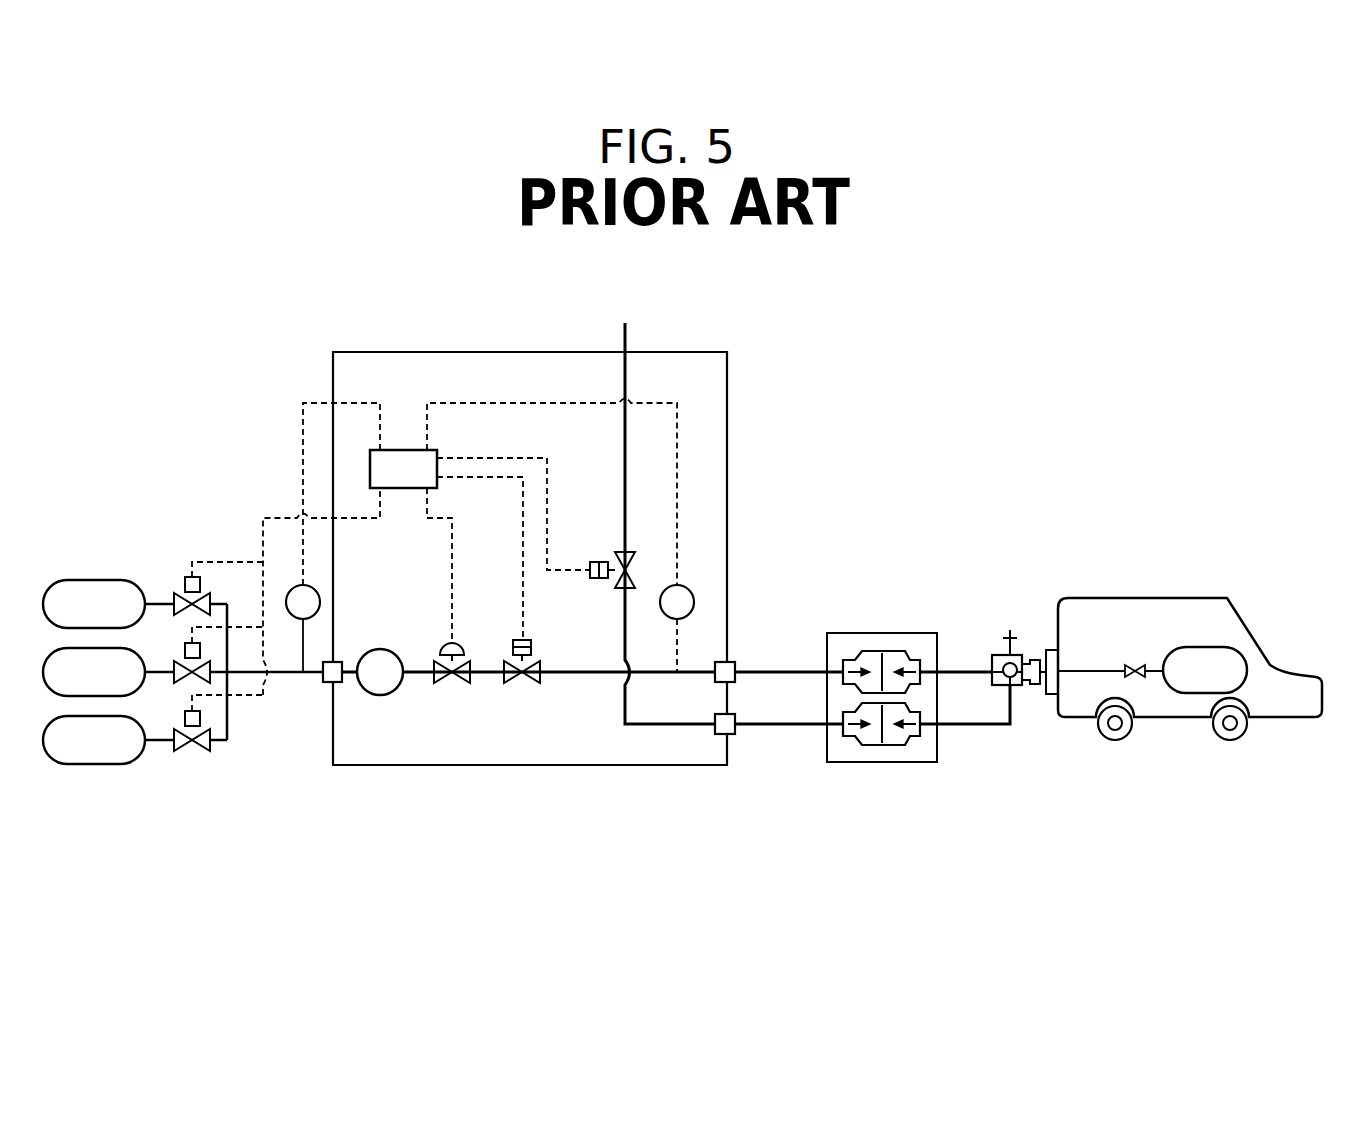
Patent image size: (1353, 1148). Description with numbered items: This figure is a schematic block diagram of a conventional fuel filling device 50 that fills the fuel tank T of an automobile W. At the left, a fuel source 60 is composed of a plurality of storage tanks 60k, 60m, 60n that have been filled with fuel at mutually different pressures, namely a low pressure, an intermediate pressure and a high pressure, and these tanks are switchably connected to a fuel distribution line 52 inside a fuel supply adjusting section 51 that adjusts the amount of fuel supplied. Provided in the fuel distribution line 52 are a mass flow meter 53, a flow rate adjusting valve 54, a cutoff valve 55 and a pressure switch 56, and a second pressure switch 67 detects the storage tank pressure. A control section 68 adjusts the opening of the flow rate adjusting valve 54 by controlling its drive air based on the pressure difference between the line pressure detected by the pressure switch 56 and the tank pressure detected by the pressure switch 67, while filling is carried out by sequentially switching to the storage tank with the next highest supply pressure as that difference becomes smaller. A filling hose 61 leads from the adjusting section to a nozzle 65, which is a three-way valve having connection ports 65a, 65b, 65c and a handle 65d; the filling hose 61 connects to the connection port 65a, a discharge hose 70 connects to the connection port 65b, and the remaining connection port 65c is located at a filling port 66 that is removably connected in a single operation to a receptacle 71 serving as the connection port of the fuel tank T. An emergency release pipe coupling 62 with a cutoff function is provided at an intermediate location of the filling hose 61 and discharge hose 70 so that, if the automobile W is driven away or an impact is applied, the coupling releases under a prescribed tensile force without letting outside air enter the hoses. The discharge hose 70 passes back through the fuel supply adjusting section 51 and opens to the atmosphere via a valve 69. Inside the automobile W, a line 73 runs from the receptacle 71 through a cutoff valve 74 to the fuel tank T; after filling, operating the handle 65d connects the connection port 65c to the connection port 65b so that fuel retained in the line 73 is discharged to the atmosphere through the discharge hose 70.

The fuel filling device 50 is at (748, 347).
The fuel supply adjusting section 51 is at (333, 373).
The fuel distribution line 52 is at (582, 676).
The mass flow meter 53 is at (380, 695).
The flow rate adjusting valve 54 is at (445, 685).
The cutoff valve 55 is at (515, 685).
The pressure switch 56 is at (684, 586).
The fuel source 60 is at (183, 712).
The storage tank 60k is at (153, 595).
The storage tank 60m is at (153, 661).
The storage tank 60n is at (153, 729).
The filling hose 61 is at (755, 668).
The emergency release pipe coupling 62 is at (868, 650).
The nozzle 65 is at (993, 657).
The connection port 65a is at (992, 679).
The connection port 65b is at (1010, 690).
The connection port 65c is at (1022, 655).
The handle 65d is at (1010, 637).
The filling port 66 is at (1039, 658).
The pressure switch 67 is at (300, 585).
The control section 68 is at (400, 450).
The valve 69 is at (632, 553).
The discharge hose 70 is at (773, 727).
The receptacle 71 is at (1047, 698).
The line 73 is at (1068, 668).
The cutoff valve 74 is at (1132, 662).
The fuel tank T is at (1193, 647).
The automobile W is at (1190, 648).